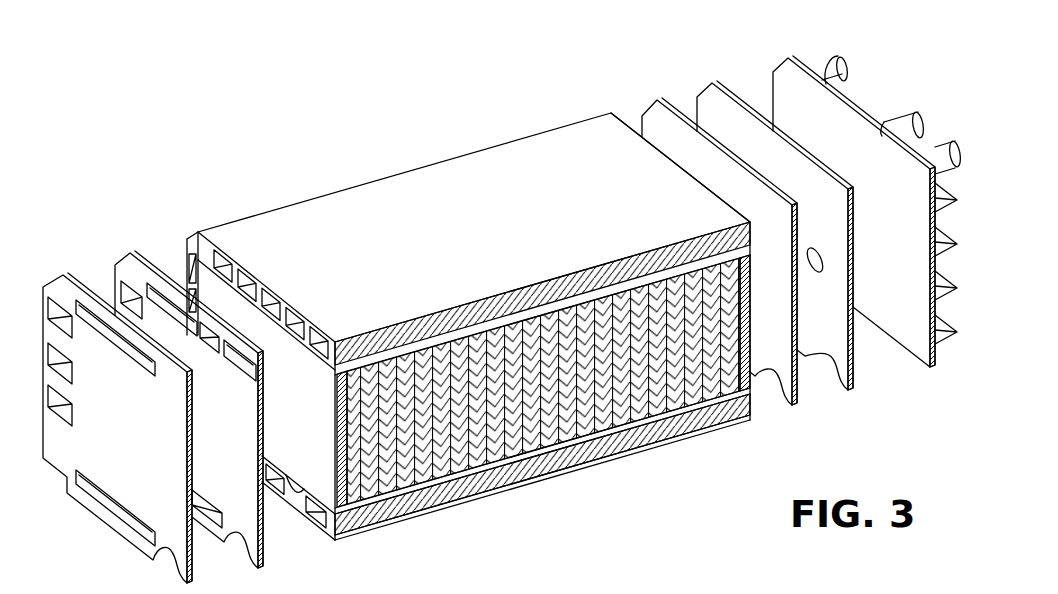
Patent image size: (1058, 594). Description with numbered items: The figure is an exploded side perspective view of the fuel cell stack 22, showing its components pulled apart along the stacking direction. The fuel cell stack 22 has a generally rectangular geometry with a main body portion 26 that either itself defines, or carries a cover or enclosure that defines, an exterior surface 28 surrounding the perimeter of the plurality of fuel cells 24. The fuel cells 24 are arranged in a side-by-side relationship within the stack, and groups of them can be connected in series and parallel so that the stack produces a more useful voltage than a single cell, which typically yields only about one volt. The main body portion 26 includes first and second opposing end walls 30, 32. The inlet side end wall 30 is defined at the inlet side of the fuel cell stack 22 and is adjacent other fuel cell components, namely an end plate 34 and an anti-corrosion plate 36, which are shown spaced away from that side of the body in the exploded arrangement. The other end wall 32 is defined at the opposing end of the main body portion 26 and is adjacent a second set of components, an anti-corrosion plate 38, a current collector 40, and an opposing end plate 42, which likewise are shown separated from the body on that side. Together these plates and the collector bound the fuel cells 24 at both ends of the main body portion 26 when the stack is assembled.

The fuel cell stack 22 is at (233, 93).
The fuel cells 24 is at (366, 478).
The main body portion 26 is at (312, 250).
The exterior surface 28 is at (511, 241).
The inlet side end wall 30 is at (195, 231).
The end wall 32 is at (607, 110).
The end plate 34 is at (60, 276).
The anti-corrosion plate 36 is at (131, 256).
The anti-corrosion plate 38 is at (658, 100).
The current collector 40 is at (733, 97).
The opposing end plate 42 is at (900, 124).